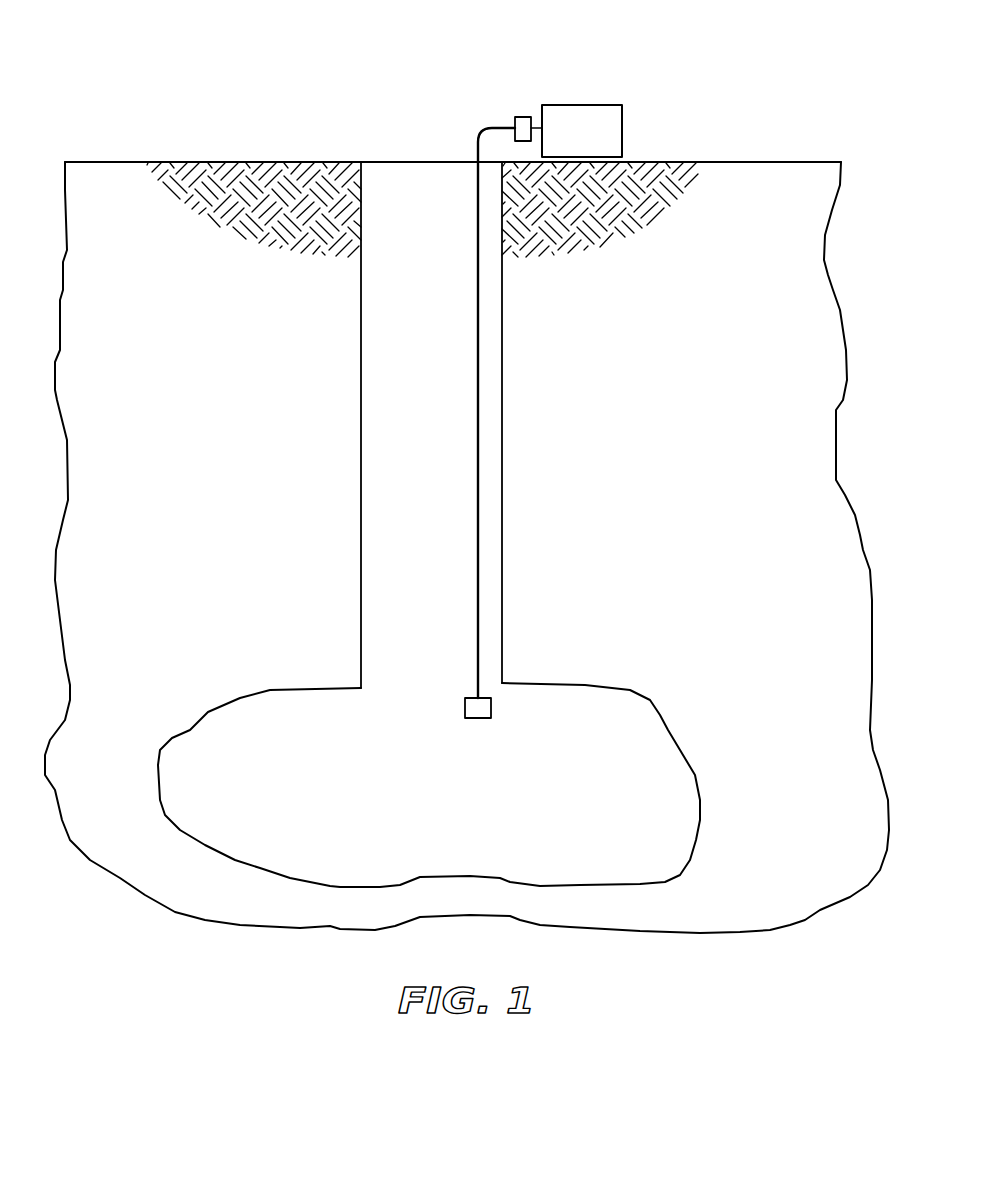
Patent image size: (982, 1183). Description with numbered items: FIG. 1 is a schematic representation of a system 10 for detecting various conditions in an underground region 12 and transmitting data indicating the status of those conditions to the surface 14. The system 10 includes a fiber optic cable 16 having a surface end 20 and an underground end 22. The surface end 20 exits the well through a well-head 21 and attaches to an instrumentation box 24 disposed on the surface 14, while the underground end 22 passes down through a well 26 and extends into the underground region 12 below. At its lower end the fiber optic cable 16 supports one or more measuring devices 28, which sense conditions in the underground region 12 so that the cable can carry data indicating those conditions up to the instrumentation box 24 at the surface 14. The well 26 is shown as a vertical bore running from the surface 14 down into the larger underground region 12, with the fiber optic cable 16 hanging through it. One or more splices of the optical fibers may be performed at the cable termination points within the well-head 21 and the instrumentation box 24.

The system 10 is at (650, 66).
The underground region 12 is at (603, 700).
The surface 14 is at (705, 162).
The fiber optic cable 16 is at (478, 335).
The surface end 20 is at (505, 128).
The well-head 21 is at (523, 117).
The underground end 22 is at (478, 685).
The instrumentation box 24 is at (612, 128).
The well 26 is at (363, 387).
The measuring devices 28 is at (476, 720).